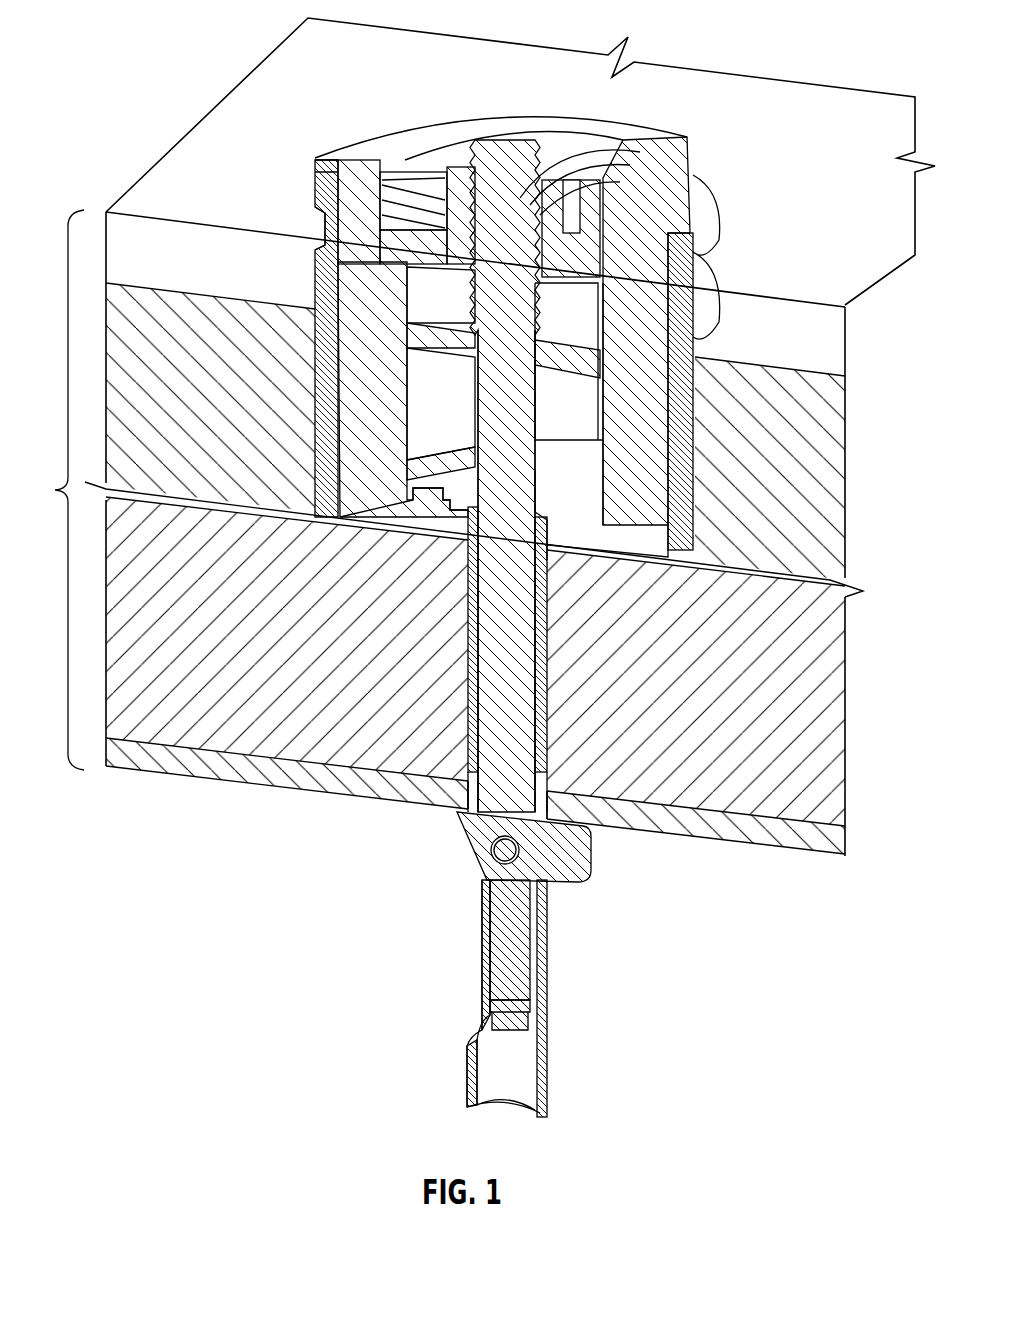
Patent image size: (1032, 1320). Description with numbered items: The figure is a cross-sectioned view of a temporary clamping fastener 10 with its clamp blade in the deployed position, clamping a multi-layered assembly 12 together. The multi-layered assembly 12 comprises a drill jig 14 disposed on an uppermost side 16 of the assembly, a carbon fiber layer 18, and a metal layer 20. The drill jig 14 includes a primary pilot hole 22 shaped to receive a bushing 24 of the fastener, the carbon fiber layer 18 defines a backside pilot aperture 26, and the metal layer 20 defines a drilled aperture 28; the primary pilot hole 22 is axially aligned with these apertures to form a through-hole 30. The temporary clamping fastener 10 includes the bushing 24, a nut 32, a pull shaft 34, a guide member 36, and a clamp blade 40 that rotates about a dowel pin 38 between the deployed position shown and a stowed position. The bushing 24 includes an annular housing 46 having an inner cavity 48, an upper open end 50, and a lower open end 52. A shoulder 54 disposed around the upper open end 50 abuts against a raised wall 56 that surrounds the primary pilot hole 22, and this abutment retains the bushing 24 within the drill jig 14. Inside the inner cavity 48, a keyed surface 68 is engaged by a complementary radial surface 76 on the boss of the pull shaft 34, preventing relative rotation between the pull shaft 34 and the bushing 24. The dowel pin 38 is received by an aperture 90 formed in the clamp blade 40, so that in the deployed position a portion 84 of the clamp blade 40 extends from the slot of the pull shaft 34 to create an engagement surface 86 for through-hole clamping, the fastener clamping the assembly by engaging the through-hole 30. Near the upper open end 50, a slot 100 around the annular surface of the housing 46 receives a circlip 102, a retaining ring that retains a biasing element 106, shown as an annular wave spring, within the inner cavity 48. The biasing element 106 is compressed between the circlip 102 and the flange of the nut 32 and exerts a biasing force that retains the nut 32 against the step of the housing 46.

The temporary clamping fastener 10 is at (561, 594).
The multi-layered assembly 12 is at (49, 490).
The drill jig 14 is at (178, 232).
The uppermost side 16 is at (206, 110).
The carbon fiber layer 18 is at (826, 708).
The metal layer 20 is at (827, 847).
The primary pilot hole 22 is at (352, 368).
The bushing 24 is at (690, 275).
The backside pilot aperture 26 is at (467, 742).
The drilled aperture 28 is at (463, 787).
The through-hole 30 is at (556, 678).
The nut 32 is at (522, 185).
The pull shaft 34 is at (520, 622).
The guide member 36 is at (545, 660).
The dowel pin 38 is at (495, 860).
The clamp blade 40 is at (570, 853).
The annular housing 46 is at (391, 320).
The inner cavity 48 is at (440, 380).
The upper open end 50 is at (406, 122).
The lower open end 52 is at (674, 538).
The shoulder 54 is at (318, 182).
The raised wall 56 is at (318, 214).
The keyed surface 68 is at (464, 429).
The radial surface 76 is at (722, 294).
The portion of the clamp blade 84 is at (572, 835).
The engagement surface 86 is at (530, 810).
The aperture 90 is at (563, 887).
The slot 100 is at (688, 190).
The circlip 102 is at (592, 210).
The biasing element 106 is at (668, 185).